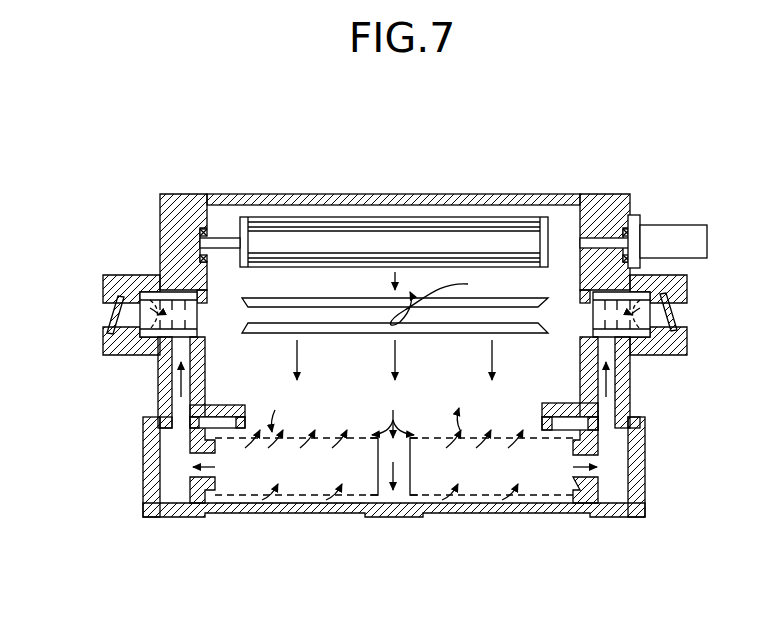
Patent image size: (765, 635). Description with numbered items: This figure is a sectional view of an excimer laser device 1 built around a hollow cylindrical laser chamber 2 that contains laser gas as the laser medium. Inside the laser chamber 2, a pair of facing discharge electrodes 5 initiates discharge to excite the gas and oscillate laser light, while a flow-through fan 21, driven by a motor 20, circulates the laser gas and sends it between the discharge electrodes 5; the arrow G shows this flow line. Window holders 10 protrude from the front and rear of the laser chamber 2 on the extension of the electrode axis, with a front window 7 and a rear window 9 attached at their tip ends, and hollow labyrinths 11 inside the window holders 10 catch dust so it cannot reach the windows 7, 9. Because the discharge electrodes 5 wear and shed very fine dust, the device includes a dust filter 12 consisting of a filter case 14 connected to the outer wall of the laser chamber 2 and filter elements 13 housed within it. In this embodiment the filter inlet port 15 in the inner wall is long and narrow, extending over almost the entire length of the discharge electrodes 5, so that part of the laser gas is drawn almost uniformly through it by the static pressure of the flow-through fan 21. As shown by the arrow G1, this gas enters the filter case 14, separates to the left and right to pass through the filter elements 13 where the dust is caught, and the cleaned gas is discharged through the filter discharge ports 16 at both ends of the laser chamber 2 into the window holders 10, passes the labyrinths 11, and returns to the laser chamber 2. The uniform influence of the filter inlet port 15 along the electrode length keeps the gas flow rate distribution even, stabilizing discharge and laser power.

The excimer laser device 1 is at (645, 168).
The laser chamber 2 is at (228, 194).
The discharge electrodes 5 is at (292, 298).
The front window 7 is at (114, 314).
The rear window 9 is at (678, 314).
The window holders 10 is at (107, 275).
The labyrinths 11 is at (150, 345).
The dust filter 12 is at (192, 538).
The filter elements 13 is at (237, 503).
The filter case 14 is at (302, 513).
The filter inlet port 15 is at (243, 418).
The filter discharge port 16 is at (162, 420).
The motor 20 is at (674, 225).
The flow-through fan 21 is at (320, 217).
The laser gas flow G is at (437, 298).
The filtered laser gas flow G1 is at (393, 282).